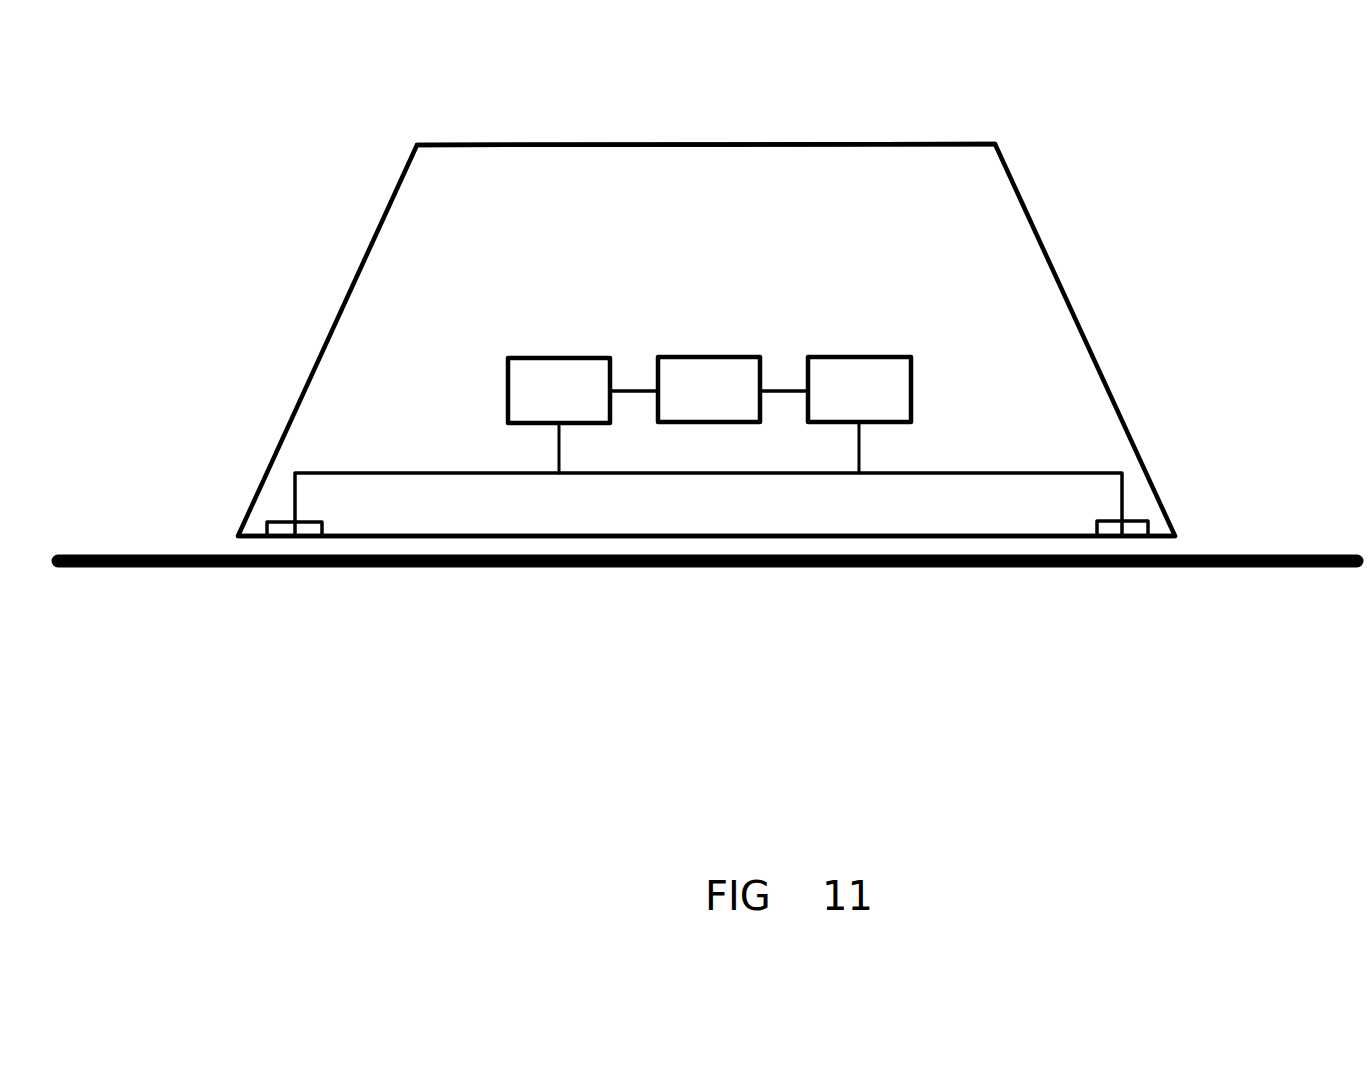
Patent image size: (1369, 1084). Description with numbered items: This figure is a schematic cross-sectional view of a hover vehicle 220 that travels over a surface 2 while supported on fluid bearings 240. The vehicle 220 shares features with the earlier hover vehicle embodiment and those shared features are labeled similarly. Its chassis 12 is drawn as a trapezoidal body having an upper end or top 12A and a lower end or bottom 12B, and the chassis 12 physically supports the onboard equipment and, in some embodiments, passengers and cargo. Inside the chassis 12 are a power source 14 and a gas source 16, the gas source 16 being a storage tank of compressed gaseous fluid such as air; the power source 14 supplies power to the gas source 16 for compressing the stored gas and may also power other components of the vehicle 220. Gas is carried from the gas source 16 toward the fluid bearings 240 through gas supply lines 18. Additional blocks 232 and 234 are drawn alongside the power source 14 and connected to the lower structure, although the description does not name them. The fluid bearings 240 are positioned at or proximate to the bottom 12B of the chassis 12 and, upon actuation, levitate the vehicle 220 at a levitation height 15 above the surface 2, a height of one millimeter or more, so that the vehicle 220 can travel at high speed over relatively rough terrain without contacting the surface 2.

The hover vehicle 220 is at (262, 120).
The chassis 12 is at (1022, 226).
The top 12A is at (978, 137).
The bottom 12B is at (977, 530).
The power source 14 is at (686, 378).
The gas source 16 is at (545, 378).
The gas supply lines 18 is at (560, 443).
The levitation height 15 is at (680, 543).
The transmitter 232 is at (897, 375).
The connection 234 is at (865, 448).
The fluid bearings 240 is at (282, 520).
The surface 2 is at (1245, 553).